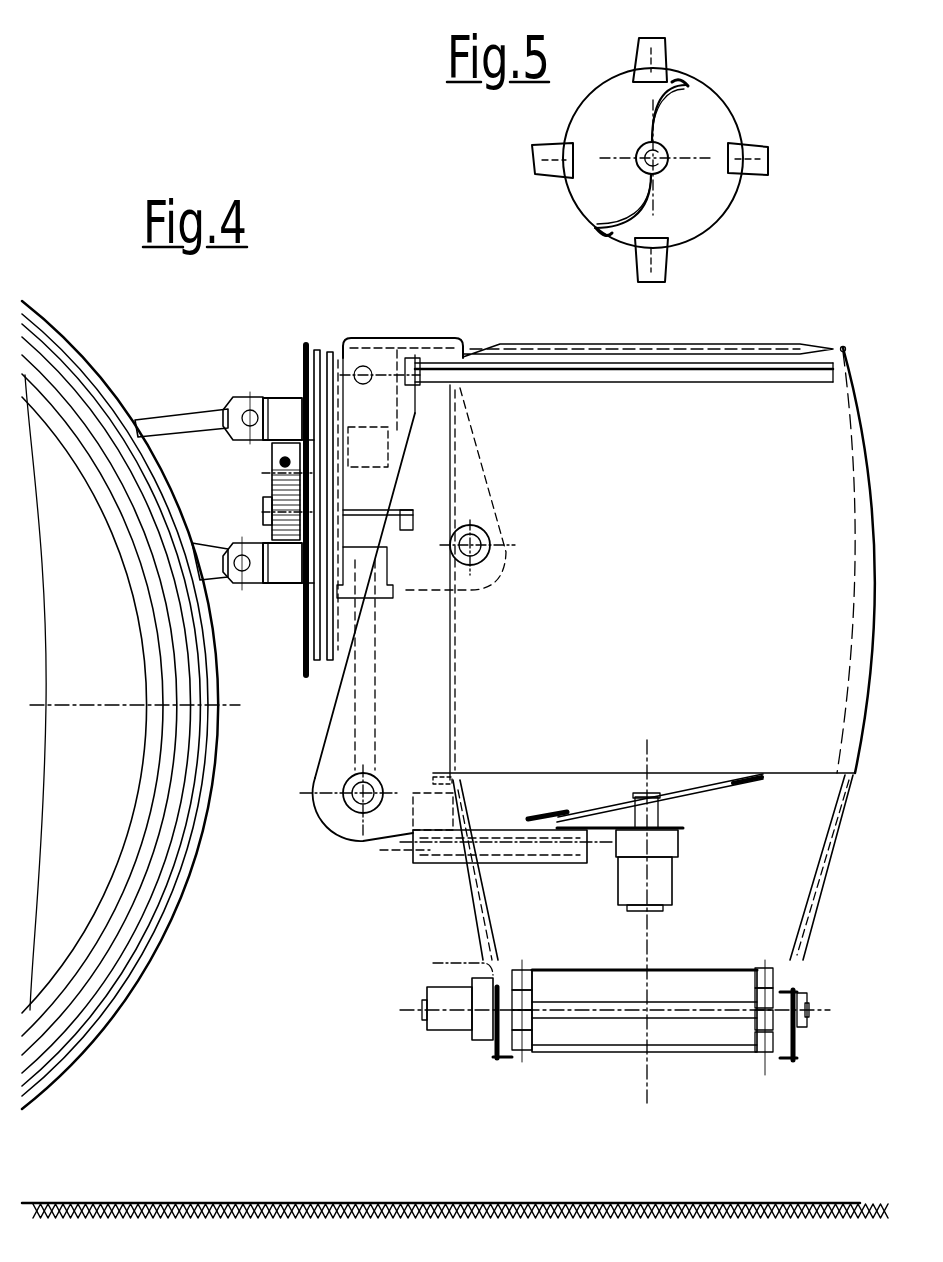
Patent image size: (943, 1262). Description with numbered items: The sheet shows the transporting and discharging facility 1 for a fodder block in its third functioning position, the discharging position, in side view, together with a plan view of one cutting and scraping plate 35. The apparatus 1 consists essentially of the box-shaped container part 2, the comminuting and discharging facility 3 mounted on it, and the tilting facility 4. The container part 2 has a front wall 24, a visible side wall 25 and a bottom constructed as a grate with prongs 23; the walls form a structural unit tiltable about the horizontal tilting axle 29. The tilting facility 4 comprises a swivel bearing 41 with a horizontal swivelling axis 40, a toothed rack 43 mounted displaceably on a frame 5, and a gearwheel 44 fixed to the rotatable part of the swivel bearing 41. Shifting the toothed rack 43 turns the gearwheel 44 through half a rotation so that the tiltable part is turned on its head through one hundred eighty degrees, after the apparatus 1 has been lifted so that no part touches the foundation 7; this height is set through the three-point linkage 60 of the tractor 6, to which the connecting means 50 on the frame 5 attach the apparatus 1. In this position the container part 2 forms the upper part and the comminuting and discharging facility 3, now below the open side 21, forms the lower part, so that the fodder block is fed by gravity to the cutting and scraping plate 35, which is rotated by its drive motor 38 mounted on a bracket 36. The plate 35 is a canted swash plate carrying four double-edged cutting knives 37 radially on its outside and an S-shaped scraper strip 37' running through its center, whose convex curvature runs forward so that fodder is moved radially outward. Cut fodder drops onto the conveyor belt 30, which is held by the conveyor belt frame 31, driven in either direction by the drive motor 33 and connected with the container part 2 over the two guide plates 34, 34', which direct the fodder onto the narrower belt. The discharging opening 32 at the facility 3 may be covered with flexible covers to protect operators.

In FIG. 4, the transporting and discharging facility 1 is at (402, 324).
In FIG. 4, the container part 2 is at (846, 335).
In FIG. 4, the comminuting and discharging facility 3 is at (465, 910).
In FIG. 4, the tilting facility 4 is at (298, 605).
In FIG. 4, the frame 5 is at (272, 400).
In FIG. 4, the tractor 6 is at (52, 315).
In FIG. 4, the foundation 7 is at (345, 1203).
In FIG. 4, the open side 21 is at (792, 785).
In FIG. 4, the prongs 23 is at (632, 344).
In FIG. 4, the front wall 24 is at (868, 440).
In FIG. 4, the side wall 25 is at (720, 608).
In FIG. 4, the tilting axle 29 is at (490, 545).
In FIG. 4, the conveyor belt 30 is at (555, 968).
In FIG. 4, the conveyor belt frame 31 is at (498, 1056).
In FIG. 4, the discharging opening 32 is at (768, 917).
In FIG. 4, the drive motor 33 is at (443, 1023).
In FIG. 4, the guide plate 34 is at (493, 870).
In FIG. 4, the guide plate 34' is at (783, 867).
In FIG. 5, the cutting and scraping plate 35 is at (703, 120).
In FIG. 4, the cutting and scraping plate 35 is at (595, 808).
In FIG. 4, the bracket 36 is at (488, 847).
In FIG. 5, the cutting knife 37 is at (665, 149).
In FIG. 4, the cutting knife 37 is at (552, 773).
In FIG. 5, the scraper strip 37' is at (680, 155).
In FIG. 4, the drive motor 38 is at (632, 888).
In FIG. 4, the swivelling axis 40 is at (402, 520).
In FIG. 4, the swivel bearing 41 is at (308, 390).
In FIG. 4, the toothed rack 43 is at (262, 462).
In FIG. 4, the gearwheel 44 is at (263, 497).
In FIG. 4, the connecting means 50 is at (245, 405).
In FIG. 4, the three-point linkage 60 is at (155, 420).